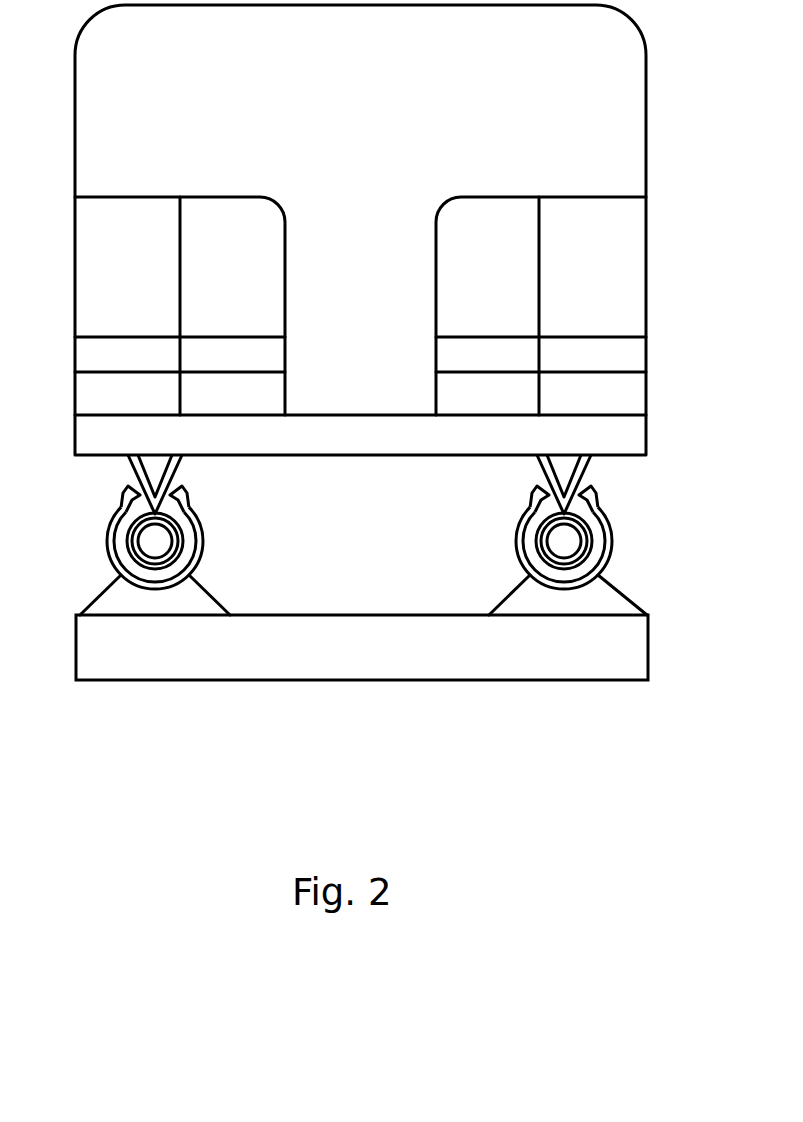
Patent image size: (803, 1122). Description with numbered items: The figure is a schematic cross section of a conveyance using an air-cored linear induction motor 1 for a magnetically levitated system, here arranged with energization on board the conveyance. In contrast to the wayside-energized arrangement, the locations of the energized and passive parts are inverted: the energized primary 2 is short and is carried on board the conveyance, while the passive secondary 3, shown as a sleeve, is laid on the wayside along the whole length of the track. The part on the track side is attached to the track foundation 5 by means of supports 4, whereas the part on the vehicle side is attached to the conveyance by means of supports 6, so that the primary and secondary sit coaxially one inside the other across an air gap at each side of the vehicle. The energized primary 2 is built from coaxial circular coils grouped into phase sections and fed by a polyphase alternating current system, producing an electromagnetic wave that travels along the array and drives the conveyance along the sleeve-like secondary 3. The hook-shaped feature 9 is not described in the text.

The air-cored linear induction motor 1 is at (157, 542).
The energized primary 2 is at (130, 541).
The passive secondary 3 is at (196, 522).
The supports 4 is at (178, 474).
The track foundation 5 is at (650, 633).
The supports 6 is at (98, 593).
The hook end 9 is at (126, 495).